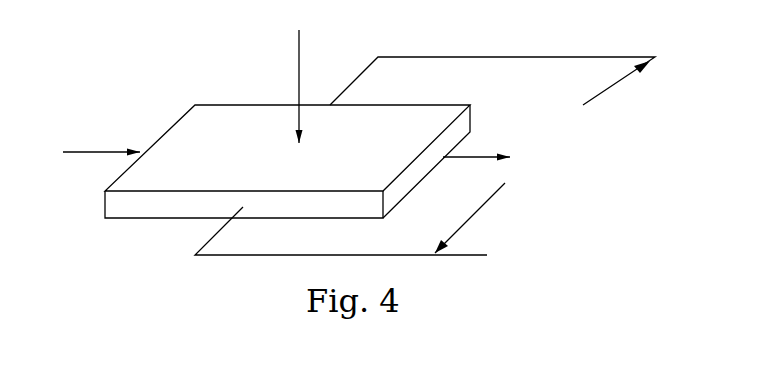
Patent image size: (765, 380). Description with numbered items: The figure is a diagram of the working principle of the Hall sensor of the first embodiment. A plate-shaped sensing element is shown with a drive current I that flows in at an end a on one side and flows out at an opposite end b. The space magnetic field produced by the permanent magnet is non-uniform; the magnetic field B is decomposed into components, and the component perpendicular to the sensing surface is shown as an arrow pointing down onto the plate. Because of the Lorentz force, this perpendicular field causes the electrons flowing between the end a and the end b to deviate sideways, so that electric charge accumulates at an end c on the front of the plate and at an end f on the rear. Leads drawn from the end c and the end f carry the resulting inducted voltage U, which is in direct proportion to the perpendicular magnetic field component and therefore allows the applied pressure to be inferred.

The end a is at (287, 148).
The end b is at (426, 161).
The end c is at (244, 204).
The end f is at (491, 81).
The drive current I is at (275, 146).
The magnetic field B is at (283, 86).
The inducted voltage U is at (383, 191).